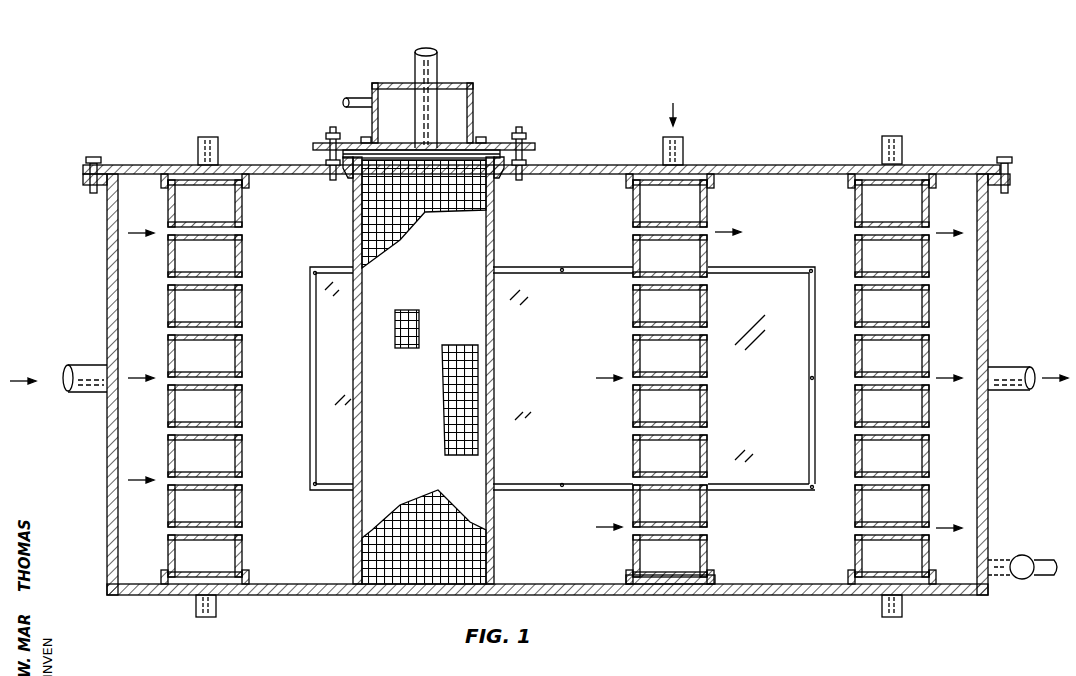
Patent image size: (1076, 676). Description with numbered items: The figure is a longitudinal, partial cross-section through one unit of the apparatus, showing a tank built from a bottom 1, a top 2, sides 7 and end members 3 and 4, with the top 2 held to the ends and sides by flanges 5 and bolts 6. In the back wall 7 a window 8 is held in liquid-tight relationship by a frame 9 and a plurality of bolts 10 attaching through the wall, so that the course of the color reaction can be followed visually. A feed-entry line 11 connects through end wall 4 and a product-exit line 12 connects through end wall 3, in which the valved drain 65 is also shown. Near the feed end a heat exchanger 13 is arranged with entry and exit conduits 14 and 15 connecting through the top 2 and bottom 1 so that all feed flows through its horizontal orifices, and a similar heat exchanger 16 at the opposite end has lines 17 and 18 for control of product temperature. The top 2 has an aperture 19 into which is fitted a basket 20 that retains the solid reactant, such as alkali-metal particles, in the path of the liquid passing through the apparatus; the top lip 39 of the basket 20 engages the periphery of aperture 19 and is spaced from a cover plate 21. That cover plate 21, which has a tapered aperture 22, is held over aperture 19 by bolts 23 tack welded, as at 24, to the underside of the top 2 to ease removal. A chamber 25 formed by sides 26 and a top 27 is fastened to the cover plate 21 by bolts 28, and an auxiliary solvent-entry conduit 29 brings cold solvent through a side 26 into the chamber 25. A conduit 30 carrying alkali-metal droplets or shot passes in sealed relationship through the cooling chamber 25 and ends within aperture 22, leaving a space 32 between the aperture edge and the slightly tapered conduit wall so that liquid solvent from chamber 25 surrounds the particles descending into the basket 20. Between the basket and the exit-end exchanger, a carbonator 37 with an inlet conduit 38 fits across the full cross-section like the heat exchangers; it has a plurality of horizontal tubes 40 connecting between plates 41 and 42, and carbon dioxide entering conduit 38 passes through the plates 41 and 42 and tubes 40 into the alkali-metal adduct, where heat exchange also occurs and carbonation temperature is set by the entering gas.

The bottom 1 is at (760, 596).
The top 2 is at (968, 165).
The end member 3 is at (988, 262).
The end member 4 is at (107, 255).
The flange 5 is at (85, 182).
The bolt 6 is at (88, 160).
The side 7 is at (780, 248).
The window 8 is at (770, 380).
The frame 9 is at (815, 338).
The bolt 10 is at (814, 488).
The feed-entry line 11 is at (72, 366).
The product-exit line 12 is at (1002, 368).
The heat exchanger 13 is at (242, 256).
The entry conduit 14 is at (218, 147).
The exit conduit 15 is at (217, 612).
The heat exchanger 16 is at (930, 215).
The entry line 17 is at (902, 146).
The line 18 is at (902, 612).
The aperture 19 is at (347, 172).
The basket 20 is at (494, 242).
The cover plate 21 is at (313, 146).
The tapered aperture 22 is at (404, 148).
The bolt 23 is at (521, 138).
The tack weld 24 is at (520, 176).
The chamber 25 is at (402, 114).
The side 26 is at (473, 98).
The top 27 is at (473, 85).
The bolt 28 is at (482, 138).
The auxiliary solvent-entry conduit 29 is at (342, 106).
The conduit 30 is at (433, 58).
The space 32 is at (437, 146).
The carbonator 37 is at (708, 254).
The inlet conduit 38 is at (683, 146).
The top lip 39 is at (506, 160).
The horizontal tube 40 is at (635, 236).
The plate 41 is at (633, 213).
The plate 42 is at (708, 213).
The valved drain 65 is at (1020, 578).